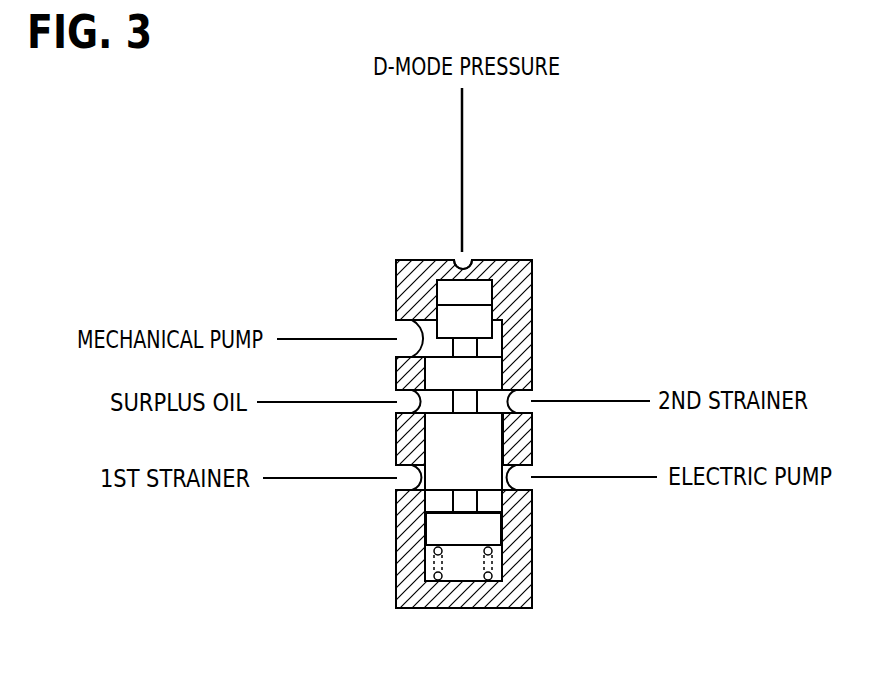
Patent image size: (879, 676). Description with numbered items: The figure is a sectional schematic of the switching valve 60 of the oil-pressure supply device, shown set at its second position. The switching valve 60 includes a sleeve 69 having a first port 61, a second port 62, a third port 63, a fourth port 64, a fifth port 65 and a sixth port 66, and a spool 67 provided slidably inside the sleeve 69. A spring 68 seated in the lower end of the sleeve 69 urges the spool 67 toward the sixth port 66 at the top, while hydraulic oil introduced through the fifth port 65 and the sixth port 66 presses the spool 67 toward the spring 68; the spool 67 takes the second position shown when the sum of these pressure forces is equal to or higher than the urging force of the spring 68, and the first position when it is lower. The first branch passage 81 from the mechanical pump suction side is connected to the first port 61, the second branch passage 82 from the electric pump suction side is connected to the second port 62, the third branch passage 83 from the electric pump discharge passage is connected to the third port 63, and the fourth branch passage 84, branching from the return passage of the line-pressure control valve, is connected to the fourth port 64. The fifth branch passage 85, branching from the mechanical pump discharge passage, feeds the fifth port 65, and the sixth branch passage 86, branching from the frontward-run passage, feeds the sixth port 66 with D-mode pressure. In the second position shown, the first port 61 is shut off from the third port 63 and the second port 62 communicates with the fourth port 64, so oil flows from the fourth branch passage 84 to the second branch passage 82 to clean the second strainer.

The switching valve 60 is at (474, 421).
The first port 61 is at (397, 486).
The second port 62 is at (530, 395).
The third port 63 is at (532, 482).
The fourth port 64 is at (397, 398).
The fifth port 65 is at (398, 333).
The sixth port 66 is at (458, 257).
The spool 67 is at (492, 530).
The spring 68 is at (480, 565).
The sleeve 69 is at (522, 302).
The first branch passage 81 is at (298, 482).
The second branch passage 82 is at (610, 403).
The third branch passage 83 is at (615, 480).
The fourth branch passage 84 is at (300, 403).
The fifth branch passage 85 is at (300, 338).
The sixth branch passage 86 is at (461, 158).